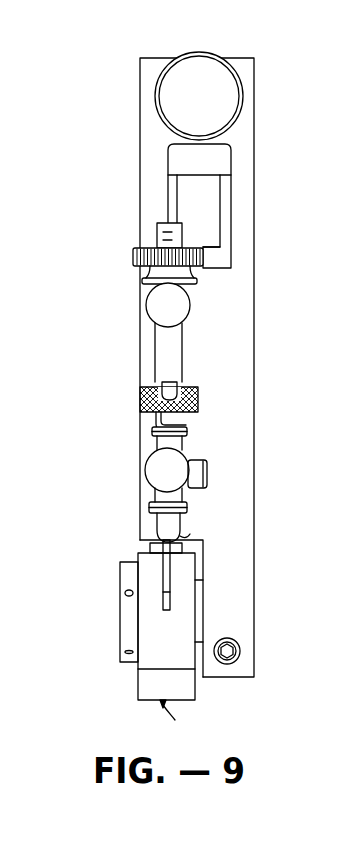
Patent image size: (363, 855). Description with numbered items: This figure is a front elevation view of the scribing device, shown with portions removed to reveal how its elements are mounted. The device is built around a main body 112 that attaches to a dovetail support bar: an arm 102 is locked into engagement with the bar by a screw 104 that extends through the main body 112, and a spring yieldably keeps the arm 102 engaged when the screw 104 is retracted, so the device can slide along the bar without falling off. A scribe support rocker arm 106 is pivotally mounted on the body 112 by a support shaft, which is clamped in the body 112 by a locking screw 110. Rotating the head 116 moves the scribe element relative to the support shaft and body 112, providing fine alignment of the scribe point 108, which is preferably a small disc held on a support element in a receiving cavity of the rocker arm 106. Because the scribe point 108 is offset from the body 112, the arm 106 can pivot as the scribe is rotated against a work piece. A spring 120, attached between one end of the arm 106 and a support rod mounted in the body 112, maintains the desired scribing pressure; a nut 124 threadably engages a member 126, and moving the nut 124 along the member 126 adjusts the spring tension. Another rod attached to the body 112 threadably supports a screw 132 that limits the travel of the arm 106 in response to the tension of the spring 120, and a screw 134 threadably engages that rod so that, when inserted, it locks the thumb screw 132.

The arm 102 is at (215, 208).
The screw 104 is at (227, 92).
The scribe support rocker arm 106 is at (147, 680).
The scribe point 108 is at (179, 719).
The locking screw 110 is at (240, 641).
The main body 112 is at (246, 336).
The head 116 is at (122, 622).
The spring 120 is at (192, 426).
The nut 124 is at (135, 258).
The member 126 is at (157, 343).
The screw 132 is at (140, 402).
The screw 134 is at (203, 475).